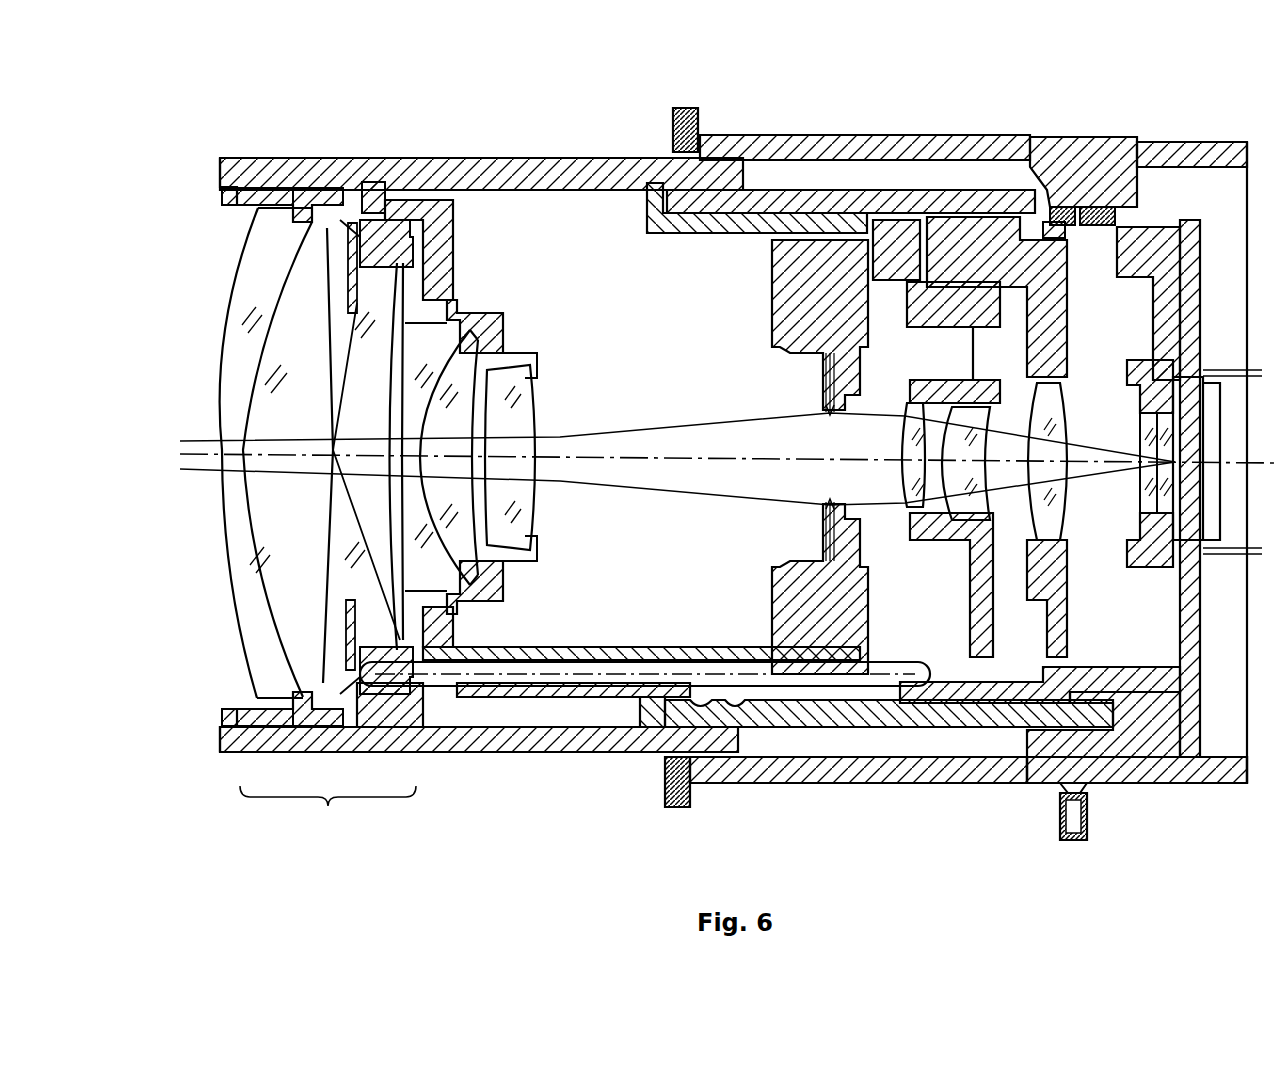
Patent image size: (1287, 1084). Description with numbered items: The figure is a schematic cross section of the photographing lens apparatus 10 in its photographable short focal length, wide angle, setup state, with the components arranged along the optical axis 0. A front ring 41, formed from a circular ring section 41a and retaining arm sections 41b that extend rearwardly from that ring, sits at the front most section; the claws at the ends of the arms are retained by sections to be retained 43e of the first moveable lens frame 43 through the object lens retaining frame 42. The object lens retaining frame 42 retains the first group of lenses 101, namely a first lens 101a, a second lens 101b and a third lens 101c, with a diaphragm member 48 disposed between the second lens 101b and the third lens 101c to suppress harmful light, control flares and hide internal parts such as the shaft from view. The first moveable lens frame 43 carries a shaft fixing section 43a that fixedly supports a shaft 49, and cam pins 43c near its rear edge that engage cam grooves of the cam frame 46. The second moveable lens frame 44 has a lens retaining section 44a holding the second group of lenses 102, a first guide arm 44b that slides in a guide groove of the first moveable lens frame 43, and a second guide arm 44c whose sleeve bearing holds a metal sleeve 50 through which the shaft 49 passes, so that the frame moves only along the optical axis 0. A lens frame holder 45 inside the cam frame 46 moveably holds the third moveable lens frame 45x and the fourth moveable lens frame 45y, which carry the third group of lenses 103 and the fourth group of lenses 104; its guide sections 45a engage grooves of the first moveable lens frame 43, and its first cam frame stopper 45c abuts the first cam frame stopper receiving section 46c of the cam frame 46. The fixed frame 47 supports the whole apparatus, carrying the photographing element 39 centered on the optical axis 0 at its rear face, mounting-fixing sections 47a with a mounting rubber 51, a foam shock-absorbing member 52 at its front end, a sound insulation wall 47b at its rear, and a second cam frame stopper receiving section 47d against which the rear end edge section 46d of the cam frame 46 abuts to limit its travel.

The optical axis 0 is at (185, 450).
The photographing lens apparatus 10 is at (543, 150).
The photographing element 39 is at (1160, 577).
The front ring 41 is at (225, 160).
The circular ring section 41a is at (252, 190).
The retaining arm sections 41b is at (300, 195).
The object lens retaining frame 42 is at (365, 222).
The first moveable lens frame 43 is at (462, 172).
The shaft fixing section 43a is at (408, 720).
The cam pins 43c is at (680, 722).
The sections to be retained 43e is at (350, 222).
The second moveable lens frame 44 is at (445, 230).
The lens retaining section 44a is at (560, 648).
The first guide arm 44b is at (700, 705).
The second guide arm 44c is at (387, 195).
The lens frame holder 45 is at (818, 222).
The guide sections 45a is at (652, 195).
The first cam frame stopper 45c is at (1045, 215).
The third moveable lens frame 45x is at (880, 240).
The fourth moveable lens frame 45y is at (965, 245).
The cam frame 46 is at (778, 155).
The first cam frame stopper receiving section 46c is at (1062, 214).
The rear end edge section 46d is at (1097, 212).
The fixed frame 47 is at (1082, 165).
The mounting-fixing sections 47a is at (1063, 834).
The sound insulation wall 47b is at (1185, 150).
The second cam frame stopper receiving section 47d is at (1200, 170).
The diaphragm member 48 is at (440, 295).
The shaft 49 is at (540, 690).
The sleeve 50 is at (633, 672).
The mounting rubber 51 is at (1087, 807).
The shock-absorbing member 52 is at (672, 122).
The first group of lenses 101 is at (328, 804).
The first lens 101a is at (275, 700).
The second lens 101b is at (322, 690).
The third lens 101c is at (380, 650).
The second group of lenses 102 is at (505, 521).
The third group of lenses 103 is at (935, 527).
The fourth group of lenses 104 is at (1060, 522).